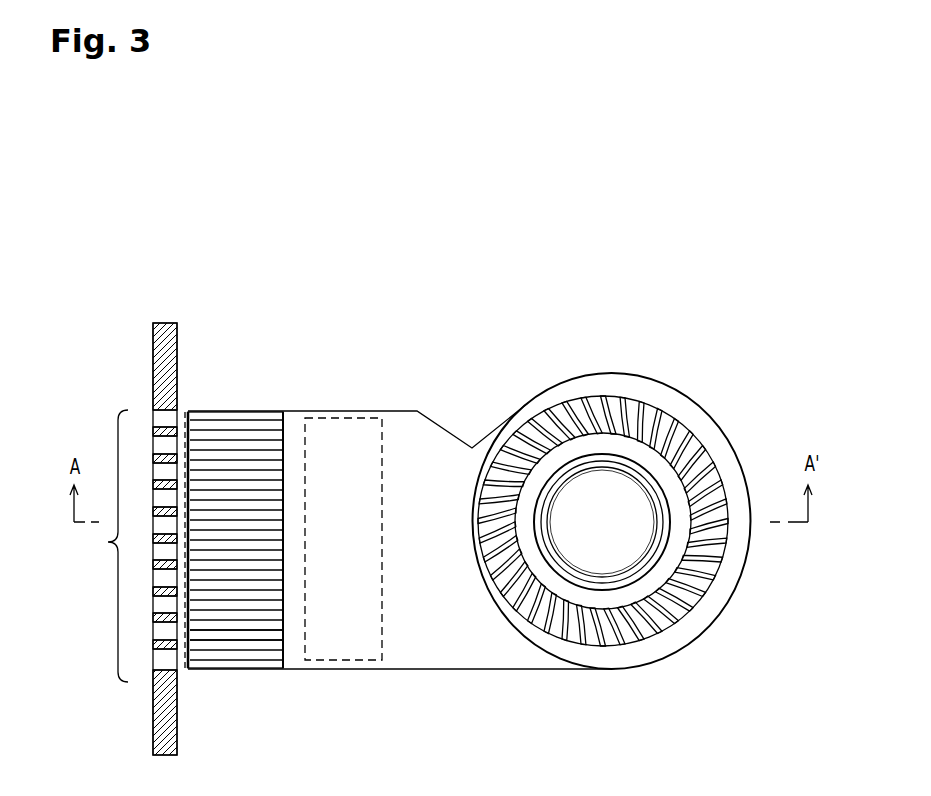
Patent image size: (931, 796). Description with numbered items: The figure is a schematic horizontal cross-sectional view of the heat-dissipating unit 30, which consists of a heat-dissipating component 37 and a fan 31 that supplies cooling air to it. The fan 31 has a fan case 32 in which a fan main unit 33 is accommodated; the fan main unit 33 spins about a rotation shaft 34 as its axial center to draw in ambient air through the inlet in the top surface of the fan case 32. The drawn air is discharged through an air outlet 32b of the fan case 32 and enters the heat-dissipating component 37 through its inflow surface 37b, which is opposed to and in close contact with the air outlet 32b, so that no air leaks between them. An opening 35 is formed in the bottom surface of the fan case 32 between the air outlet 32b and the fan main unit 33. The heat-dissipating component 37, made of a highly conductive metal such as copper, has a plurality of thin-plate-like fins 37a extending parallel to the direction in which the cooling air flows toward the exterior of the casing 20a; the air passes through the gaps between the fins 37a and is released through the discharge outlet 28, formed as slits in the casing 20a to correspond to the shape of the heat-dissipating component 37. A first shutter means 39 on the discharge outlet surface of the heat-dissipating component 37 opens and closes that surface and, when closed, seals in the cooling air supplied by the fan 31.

The casing 20a is at (153, 372).
The discharge outlet 28 is at (102, 546).
The heat-dissipating unit 30 is at (567, 277).
The fan 31 is at (600, 372).
The fan case 32 is at (671, 403).
The air outlet 32b is at (282, 605).
The fan main unit 33 is at (673, 470).
The rotation shaft 34 is at (602, 521).
The opening 35 is at (340, 647).
The heat-dissipating component 37 is at (239, 411).
The fins 37a is at (218, 633).
The inflow surface 37b is at (283, 468).
The first shutter means 39 is at (190, 455).